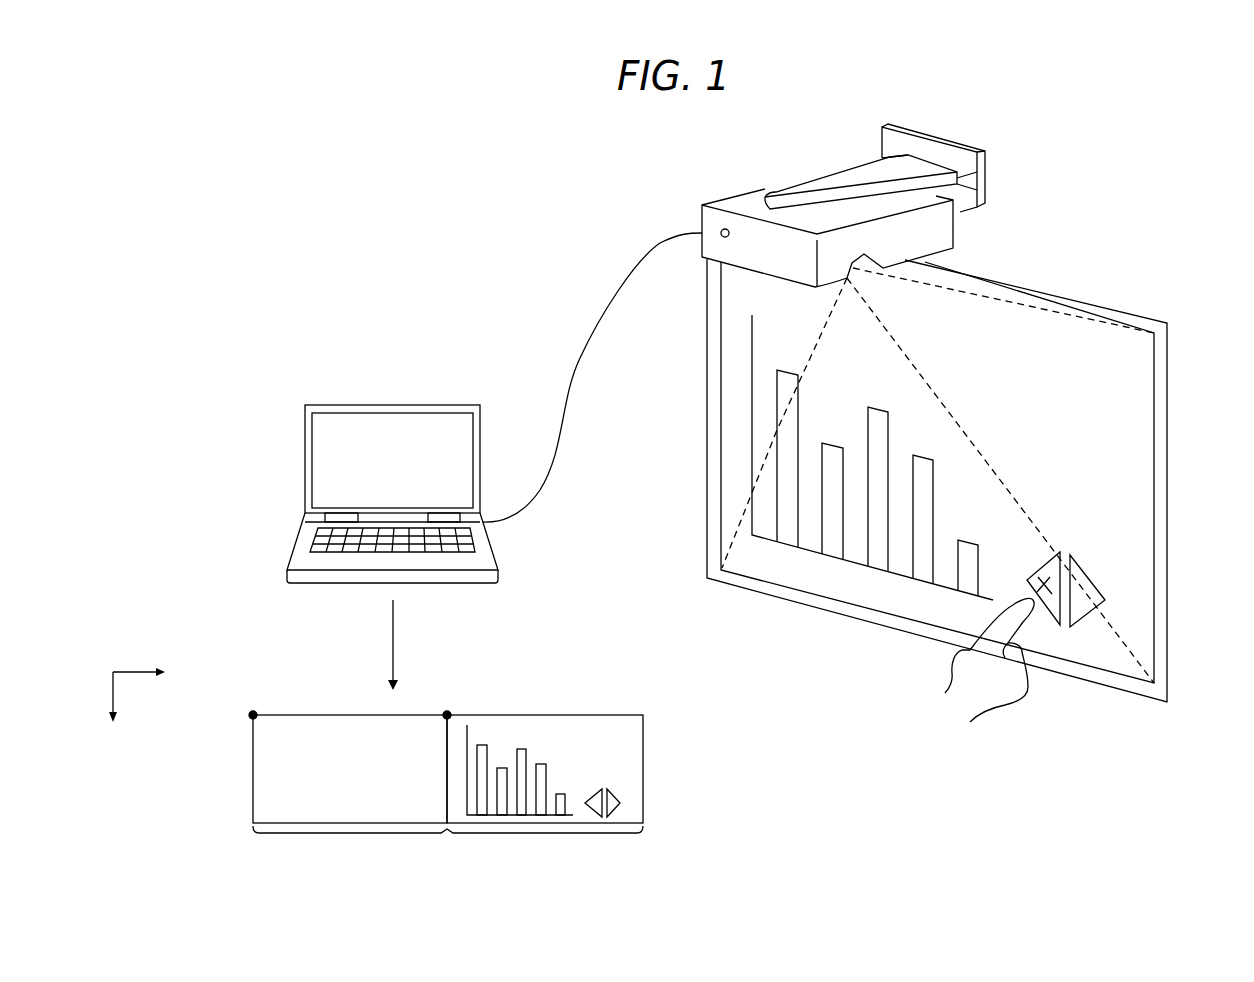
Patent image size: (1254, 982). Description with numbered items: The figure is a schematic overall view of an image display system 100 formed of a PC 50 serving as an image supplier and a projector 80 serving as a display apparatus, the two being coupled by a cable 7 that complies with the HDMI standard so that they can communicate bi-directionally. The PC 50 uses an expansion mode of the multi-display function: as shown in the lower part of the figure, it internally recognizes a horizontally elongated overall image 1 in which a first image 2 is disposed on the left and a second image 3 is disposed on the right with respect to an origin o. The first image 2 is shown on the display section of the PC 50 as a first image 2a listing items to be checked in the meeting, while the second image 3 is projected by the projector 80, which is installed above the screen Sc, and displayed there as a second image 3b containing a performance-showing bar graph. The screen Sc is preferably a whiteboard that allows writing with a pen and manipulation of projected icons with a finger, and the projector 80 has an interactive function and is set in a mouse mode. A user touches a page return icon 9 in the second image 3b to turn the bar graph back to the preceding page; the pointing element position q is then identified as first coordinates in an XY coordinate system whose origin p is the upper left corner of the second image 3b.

The image display system 100 is at (544, 166).
The projector 80 is at (741, 202).
The origin p is at (730, 237).
The cable 7 is at (588, 360).
The PC 50 is at (387, 405).
The first image 2a is at (323, 463).
The screen Sc is at (1160, 353).
The second image 3b is at (1127, 403).
The page return icon 9 is at (1043, 570).
The pointing element position q is at (1047, 595).
The origin o is at (253, 705).
The first image 2 is at (260, 757).
The second image 3 is at (635, 757).
The overall image 1 is at (448, 848).